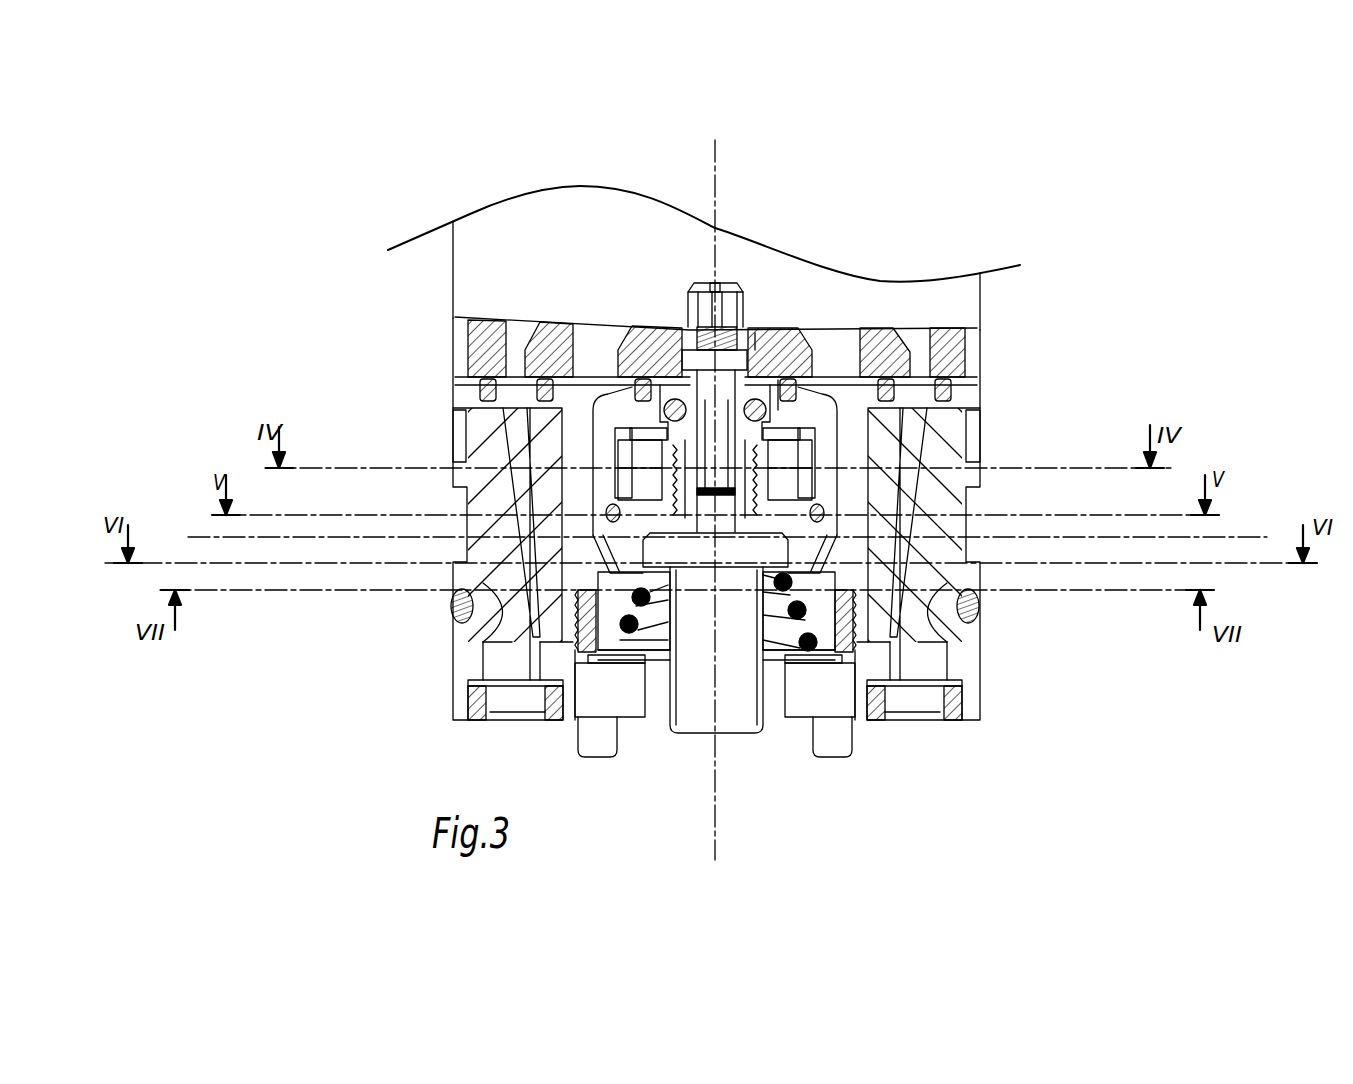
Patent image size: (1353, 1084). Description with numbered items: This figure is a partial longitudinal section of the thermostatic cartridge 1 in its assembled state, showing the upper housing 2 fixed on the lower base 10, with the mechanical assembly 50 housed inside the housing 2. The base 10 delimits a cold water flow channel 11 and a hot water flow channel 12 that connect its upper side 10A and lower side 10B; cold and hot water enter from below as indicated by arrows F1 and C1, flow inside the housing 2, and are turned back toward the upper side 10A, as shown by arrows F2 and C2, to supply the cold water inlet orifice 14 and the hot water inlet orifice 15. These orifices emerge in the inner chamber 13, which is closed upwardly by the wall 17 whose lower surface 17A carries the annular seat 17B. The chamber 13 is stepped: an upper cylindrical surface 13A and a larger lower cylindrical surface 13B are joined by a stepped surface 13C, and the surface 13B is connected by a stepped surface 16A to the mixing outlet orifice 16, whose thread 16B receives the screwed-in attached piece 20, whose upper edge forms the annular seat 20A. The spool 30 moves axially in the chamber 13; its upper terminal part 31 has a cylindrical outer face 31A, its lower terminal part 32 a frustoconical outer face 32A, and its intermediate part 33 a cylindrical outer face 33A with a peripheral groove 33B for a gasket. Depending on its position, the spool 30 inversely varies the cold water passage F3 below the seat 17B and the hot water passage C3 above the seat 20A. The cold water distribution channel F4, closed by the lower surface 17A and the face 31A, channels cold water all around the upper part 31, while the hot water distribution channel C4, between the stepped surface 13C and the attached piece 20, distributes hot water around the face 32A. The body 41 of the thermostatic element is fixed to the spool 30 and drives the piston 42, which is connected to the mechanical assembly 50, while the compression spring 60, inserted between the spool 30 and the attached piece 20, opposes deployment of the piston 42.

The thermostatic cartridge 1 is at (1018, 241).
The upper housing 2 is at (440, 265).
The mechanical assembly 50 is at (440, 296).
The lower base 10 is at (442, 683).
The upper side of the base 10A is at (450, 372).
The lower side of the base 10B is at (448, 730).
The cold water flow channel 11 is at (900, 657).
The hot water flow channel 12 is at (475, 628).
The inner chamber 13 is at (657, 428).
The cylindrical surface 13A is at (583, 501).
The cylindrical surface 13B is at (722, 572).
The stepped surface 13C is at (760, 553).
The cold water inlet orifice 14 is at (900, 470).
The hot water inlet orifice 15 is at (615, 423).
The mixing outlet orifice 16 is at (655, 675).
The stepped surface 16A is at (920, 640).
The thread 16B is at (605, 658).
The wall 17 is at (790, 480).
The lower surface of the wall 17A is at (778, 380).
The annular seat 17B is at (972, 483).
The attached piece 20 is at (938, 690).
The annular seat 20A is at (940, 573).
The spool 30 is at (1158, 600).
The upper terminal part 31 is at (835, 505).
The cylindrical outer face 31A is at (590, 450).
The lower terminal part 32 is at (840, 555).
The frustoconical outer face 32A is at (600, 556).
The intermediate part 33 is at (838, 530).
The cylindrical outer face 33A is at (595, 513).
The peripheral groove 33B is at (600, 530).
The body of the thermostatic element 41 is at (716, 650).
The piston 42 is at (756, 338).
The compression spring 60 is at (795, 618).
The hot water supply arrow C1 is at (513, 716).
The hot water return arrow C2 is at (592, 348).
The hot water passage C3 is at (592, 574).
The hot water distribution channel C4 is at (842, 533).
The cold water supply arrow F1 is at (917, 716).
The cold water return arrow F2 is at (836, 348).
The cold water passage F3 is at (832, 442).
The cold water distribution channel F4 is at (592, 403).